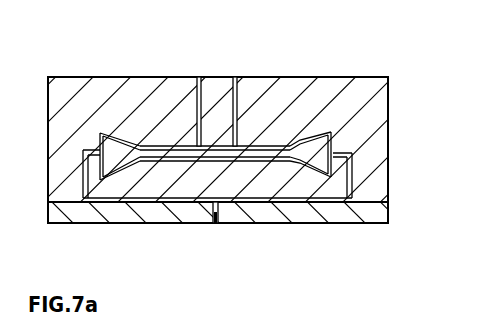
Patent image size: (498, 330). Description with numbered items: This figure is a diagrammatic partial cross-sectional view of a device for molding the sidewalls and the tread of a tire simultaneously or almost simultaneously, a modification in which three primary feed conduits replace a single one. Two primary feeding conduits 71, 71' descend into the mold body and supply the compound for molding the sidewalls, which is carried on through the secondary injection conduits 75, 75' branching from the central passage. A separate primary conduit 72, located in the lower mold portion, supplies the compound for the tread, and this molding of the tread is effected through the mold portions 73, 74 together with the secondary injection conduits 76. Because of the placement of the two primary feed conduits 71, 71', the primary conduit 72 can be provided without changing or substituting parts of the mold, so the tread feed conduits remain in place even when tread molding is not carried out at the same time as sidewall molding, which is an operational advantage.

The primary feeding conduit 71 is at (205, 81).
The primary feeding conduit 71' is at (264, 78).
The primary conduit 72 is at (214, 223).
The mold portion 73 is at (370, 210).
The mold portion 74 is at (380, 194).
The secondary injection conduit 75 is at (137, 99).
The secondary injection conduit 75' is at (215, 212).
The secondary injection conduit 76 is at (350, 155).